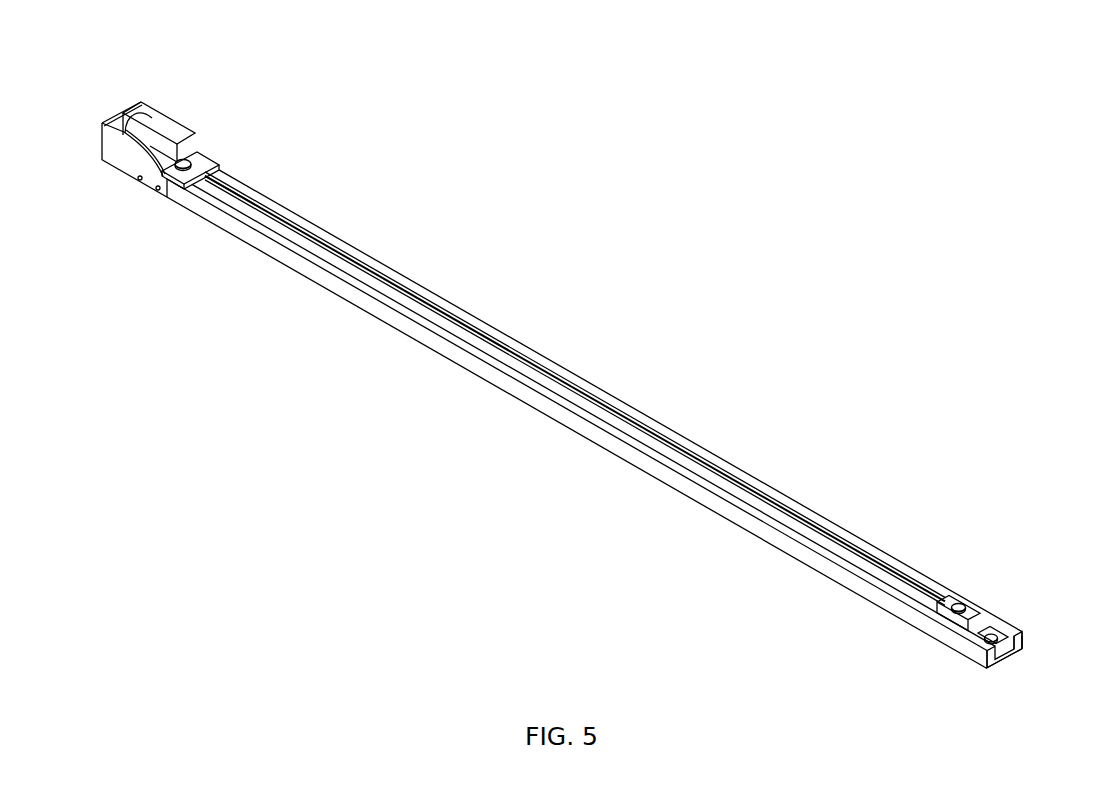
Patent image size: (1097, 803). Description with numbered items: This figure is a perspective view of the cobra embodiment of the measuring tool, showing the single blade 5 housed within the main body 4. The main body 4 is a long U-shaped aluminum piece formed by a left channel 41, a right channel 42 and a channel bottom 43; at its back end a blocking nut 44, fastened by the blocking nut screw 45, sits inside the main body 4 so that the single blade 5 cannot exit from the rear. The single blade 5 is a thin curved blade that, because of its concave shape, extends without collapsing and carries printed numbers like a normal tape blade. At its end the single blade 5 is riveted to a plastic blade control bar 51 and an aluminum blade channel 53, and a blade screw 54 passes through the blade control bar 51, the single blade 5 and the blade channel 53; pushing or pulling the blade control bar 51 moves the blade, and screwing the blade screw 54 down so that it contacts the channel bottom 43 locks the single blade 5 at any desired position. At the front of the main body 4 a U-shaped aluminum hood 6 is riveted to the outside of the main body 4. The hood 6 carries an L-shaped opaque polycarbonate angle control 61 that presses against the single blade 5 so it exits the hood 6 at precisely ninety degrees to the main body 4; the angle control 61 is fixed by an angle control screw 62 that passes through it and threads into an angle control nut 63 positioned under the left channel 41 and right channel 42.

The main body 4 is at (687, 440).
The left channel 41 is at (987, 668).
The right channel 42 is at (1022, 634).
The channel bottom 43 is at (1010, 657).
The blocking nut 44 is at (1022, 650).
The blocking nut screw 45 is at (1007, 626).
The single blade 5 is at (150, 117).
The blade control bar 51 is at (950, 598).
The blade channel 53 is at (992, 633).
The blade screw 54 is at (960, 606).
The hood 6 is at (115, 162).
The angle control 61 is at (178, 138).
The angle control screw 62 is at (191, 163).
The angle control nut 63 is at (223, 185).